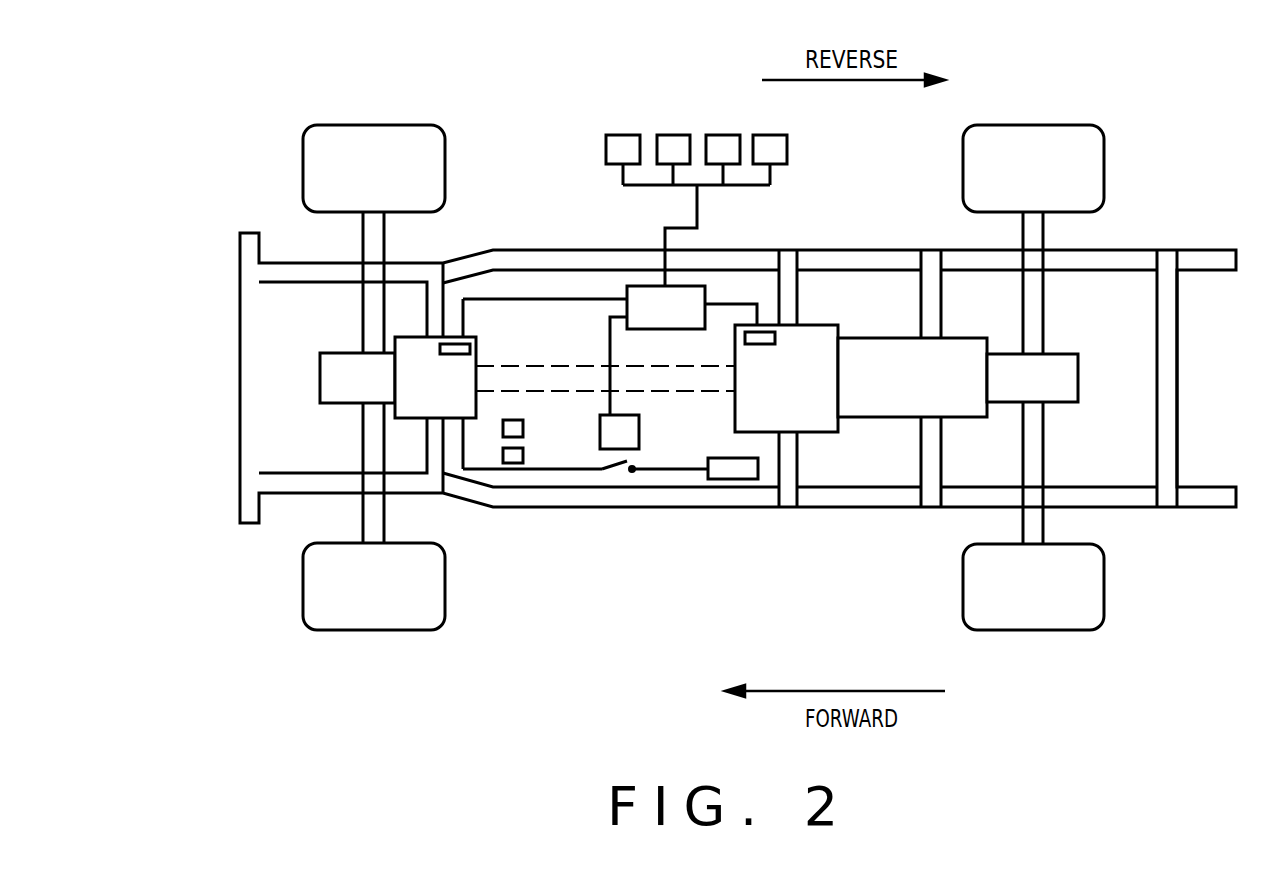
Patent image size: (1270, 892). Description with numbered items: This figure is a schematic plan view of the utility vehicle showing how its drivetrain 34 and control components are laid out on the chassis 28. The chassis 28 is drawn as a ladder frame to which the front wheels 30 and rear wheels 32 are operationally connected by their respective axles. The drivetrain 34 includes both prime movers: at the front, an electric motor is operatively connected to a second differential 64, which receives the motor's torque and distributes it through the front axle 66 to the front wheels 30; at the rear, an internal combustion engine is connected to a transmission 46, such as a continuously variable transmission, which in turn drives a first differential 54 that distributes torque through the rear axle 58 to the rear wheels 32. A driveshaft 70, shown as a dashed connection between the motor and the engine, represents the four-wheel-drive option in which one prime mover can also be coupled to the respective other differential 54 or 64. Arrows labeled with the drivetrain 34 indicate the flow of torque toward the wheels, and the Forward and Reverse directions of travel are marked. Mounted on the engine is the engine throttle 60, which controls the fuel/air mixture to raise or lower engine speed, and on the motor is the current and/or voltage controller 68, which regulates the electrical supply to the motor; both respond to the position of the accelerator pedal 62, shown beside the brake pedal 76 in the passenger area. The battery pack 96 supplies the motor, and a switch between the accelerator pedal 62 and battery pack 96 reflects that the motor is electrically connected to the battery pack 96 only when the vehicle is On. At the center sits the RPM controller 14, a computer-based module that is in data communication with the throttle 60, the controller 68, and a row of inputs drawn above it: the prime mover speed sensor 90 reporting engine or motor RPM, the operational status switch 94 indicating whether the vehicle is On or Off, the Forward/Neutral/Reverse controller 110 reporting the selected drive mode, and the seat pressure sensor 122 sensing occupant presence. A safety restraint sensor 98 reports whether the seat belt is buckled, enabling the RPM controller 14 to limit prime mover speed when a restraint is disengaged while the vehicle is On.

The safety restraint prime mover RPM controller 14 is at (700, 291).
The chassis 28 is at (781, 251).
The front wheels 30 is at (364, 148).
The rear wheels 32 is at (1058, 142).
The drivetrain 34 is at (543, 322).
The transmission 46 is at (860, 402).
The first differential 54 is at (1080, 393).
The rear axle 58 is at (1038, 315).
The engine throttle 60 is at (765, 337).
The accelerator pedal 62 is at (523, 428).
The second differential 64 is at (320, 380).
The front axle 66 is at (373, 310).
The motor current and/or voltage controller 68 is at (450, 344).
The driveshaft 70 is at (510, 378).
The brake pedal 76 is at (523, 456).
The prime mover speed sensor 90 is at (618, 135).
The vehicle operational status sensor, switch or device 94 is at (673, 135).
The battery pack 96 is at (737, 479).
The safety restraint sensor 98 is at (632, 433).
The Forward/Neutral/Reverse controller 110 is at (725, 135).
The seat pressure sensor 122 is at (773, 135).